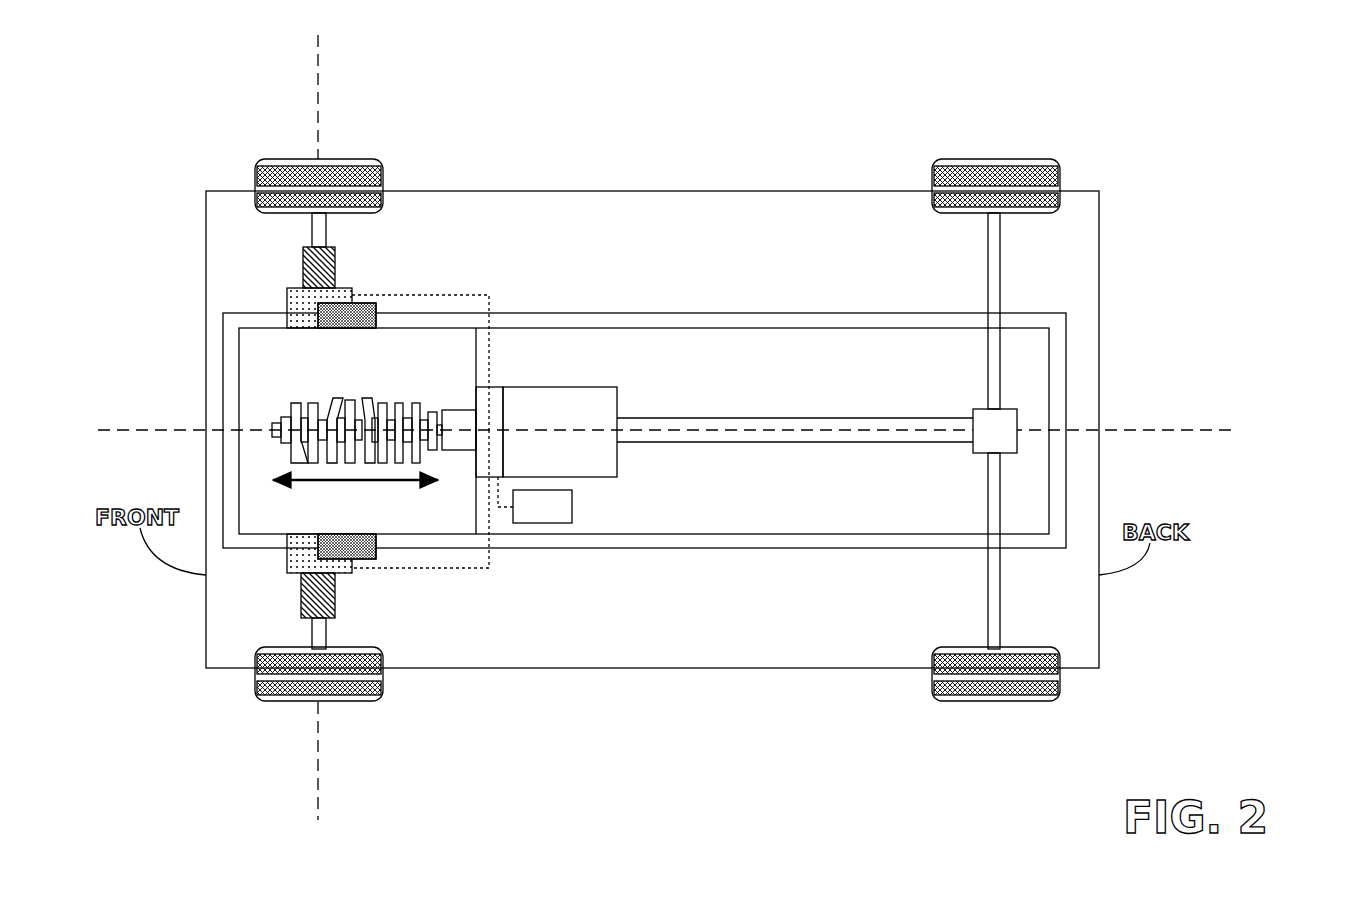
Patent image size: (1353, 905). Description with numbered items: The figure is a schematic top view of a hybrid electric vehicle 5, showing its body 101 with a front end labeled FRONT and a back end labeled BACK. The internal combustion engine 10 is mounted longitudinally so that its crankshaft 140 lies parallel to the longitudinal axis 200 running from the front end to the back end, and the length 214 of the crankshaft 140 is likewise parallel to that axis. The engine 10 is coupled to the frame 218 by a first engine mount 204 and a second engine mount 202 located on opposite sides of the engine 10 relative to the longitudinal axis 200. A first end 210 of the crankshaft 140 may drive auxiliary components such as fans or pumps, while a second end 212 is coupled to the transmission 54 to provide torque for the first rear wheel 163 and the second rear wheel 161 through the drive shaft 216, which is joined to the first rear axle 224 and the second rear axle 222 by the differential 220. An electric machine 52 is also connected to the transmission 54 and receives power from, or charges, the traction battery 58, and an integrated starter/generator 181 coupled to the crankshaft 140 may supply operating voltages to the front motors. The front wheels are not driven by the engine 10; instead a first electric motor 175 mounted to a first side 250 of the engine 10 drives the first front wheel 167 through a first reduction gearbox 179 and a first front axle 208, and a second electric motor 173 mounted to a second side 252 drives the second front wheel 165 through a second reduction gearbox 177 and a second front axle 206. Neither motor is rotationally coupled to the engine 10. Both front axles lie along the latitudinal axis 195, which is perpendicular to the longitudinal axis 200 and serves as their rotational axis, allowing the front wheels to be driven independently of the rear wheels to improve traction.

The hybrid electric vehicle 5 is at (1101, 112).
The internal combustion engine 10 is at (272, 326).
The electric machine 52 is at (497, 387).
The transmission 54 is at (560, 387).
The traction battery 58 is at (572, 507).
The body 101 is at (430, 191).
The crankshaft 140 is at (295, 400).
The second rear wheel 161 is at (998, 160).
The first rear wheel 163 is at (977, 702).
The second front wheel 165 is at (352, 162).
The first front wheel 167 is at (350, 702).
The second electric motor 173 is at (290, 296).
The first electric motor 175 is at (292, 574).
The second reduction gearbox 177 is at (304, 252).
The first reduction gearbox 179 is at (305, 620).
The integrated starter/generator 181 is at (460, 452).
The latitudinal axis 195 is at (320, 100).
The longitudinal axis 200 is at (103, 432).
The second engine mount 202 is at (362, 303).
The first engine mount 204 is at (366, 560).
The second front axle 206 is at (326, 233).
The first front axle 208 is at (326, 635).
The first end 210 is at (265, 392).
The second end 212 is at (449, 391).
The length 214 is at (320, 482).
The drive shaft 216 is at (684, 418).
The frame 218 is at (817, 313).
The differential 220 is at (975, 410).
The second rear axle 222 is at (987, 230).
The first rear axle 224 is at (987, 625).
The first side 250 is at (430, 550).
The second side 252 is at (429, 312).